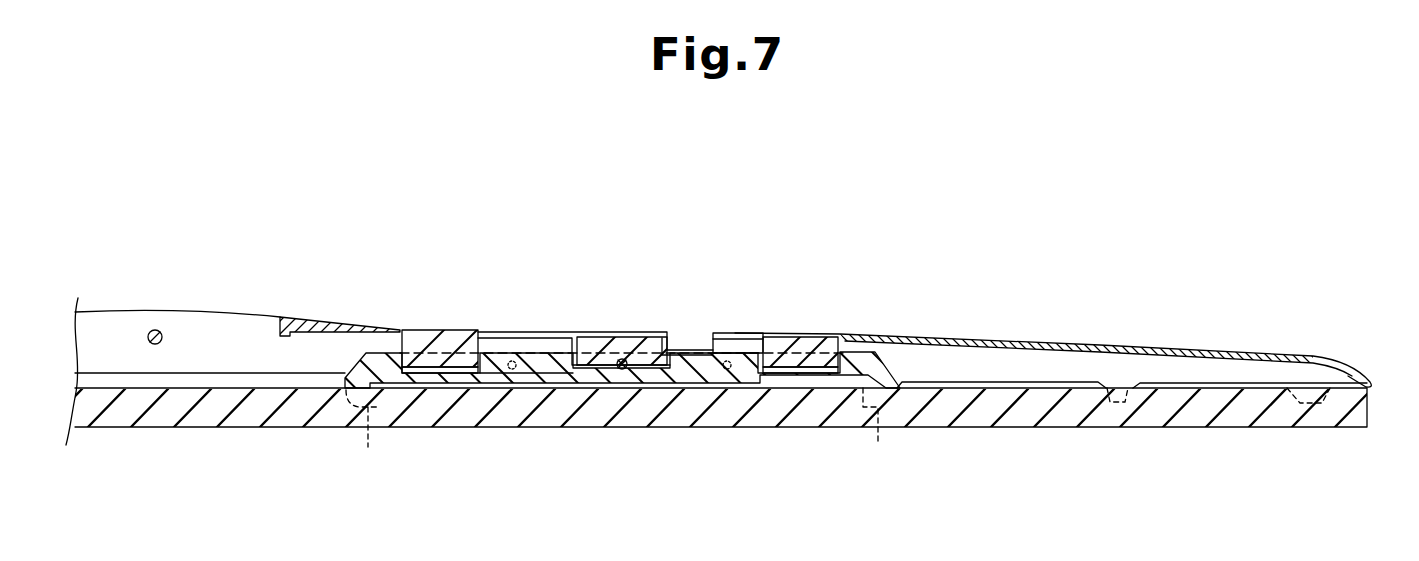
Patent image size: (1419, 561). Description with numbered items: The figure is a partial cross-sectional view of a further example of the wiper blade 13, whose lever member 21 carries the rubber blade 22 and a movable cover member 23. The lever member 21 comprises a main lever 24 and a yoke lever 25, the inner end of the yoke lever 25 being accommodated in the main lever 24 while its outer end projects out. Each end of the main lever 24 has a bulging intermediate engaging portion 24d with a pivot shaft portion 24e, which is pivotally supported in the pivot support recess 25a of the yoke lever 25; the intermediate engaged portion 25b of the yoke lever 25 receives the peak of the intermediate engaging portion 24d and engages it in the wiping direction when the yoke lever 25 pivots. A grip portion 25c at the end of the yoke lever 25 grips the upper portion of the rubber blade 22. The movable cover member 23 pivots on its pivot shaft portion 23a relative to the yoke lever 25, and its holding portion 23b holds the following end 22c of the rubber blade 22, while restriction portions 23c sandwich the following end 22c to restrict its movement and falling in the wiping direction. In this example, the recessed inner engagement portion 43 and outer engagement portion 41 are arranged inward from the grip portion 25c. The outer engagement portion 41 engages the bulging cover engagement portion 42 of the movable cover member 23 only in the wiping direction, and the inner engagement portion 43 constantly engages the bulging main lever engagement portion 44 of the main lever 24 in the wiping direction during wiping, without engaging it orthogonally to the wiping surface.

The wiper blade 13 is at (532, 233).
The lever member 21 is at (518, 323).
The rubber blade 22 is at (208, 421).
The following end 22c is at (1194, 426).
The movable cover member 23 is at (1022, 343).
The pivot shaft portion 23a is at (725, 343).
The holding portion 23b is at (1316, 403).
The restriction portion 23c is at (1115, 402).
The main lever 24 is at (313, 314).
The intermediate engaging portion 24d is at (553, 383).
The pivot shaft portion 24e is at (632, 350).
The yoke lever 25 is at (533, 363).
The pivot support recess 25a is at (621, 369).
The intermediate engaged portion 25b is at (657, 368).
The grip portion 25c is at (620, 434).
The outer engagement portion 41 is at (813, 373).
The cover engagement portion 42 is at (803, 355).
The inner engagement portion 43 is at (419, 373).
The main lever engagement portion 44 is at (435, 350).